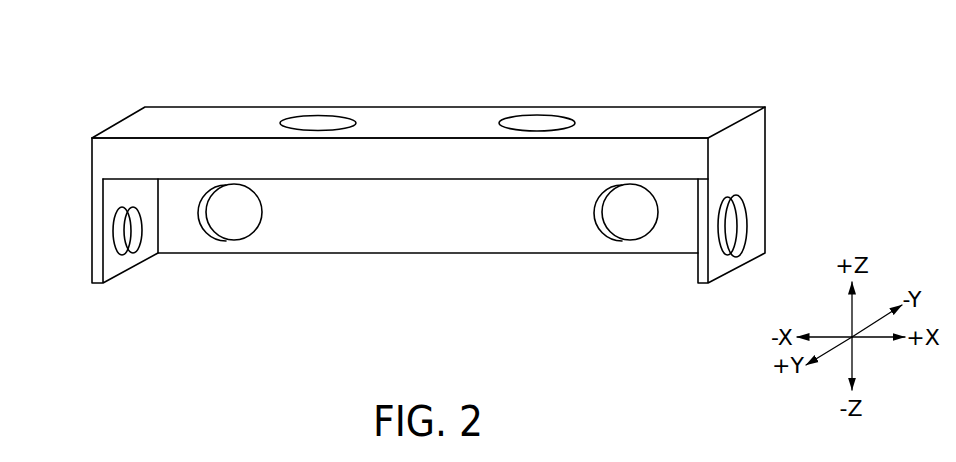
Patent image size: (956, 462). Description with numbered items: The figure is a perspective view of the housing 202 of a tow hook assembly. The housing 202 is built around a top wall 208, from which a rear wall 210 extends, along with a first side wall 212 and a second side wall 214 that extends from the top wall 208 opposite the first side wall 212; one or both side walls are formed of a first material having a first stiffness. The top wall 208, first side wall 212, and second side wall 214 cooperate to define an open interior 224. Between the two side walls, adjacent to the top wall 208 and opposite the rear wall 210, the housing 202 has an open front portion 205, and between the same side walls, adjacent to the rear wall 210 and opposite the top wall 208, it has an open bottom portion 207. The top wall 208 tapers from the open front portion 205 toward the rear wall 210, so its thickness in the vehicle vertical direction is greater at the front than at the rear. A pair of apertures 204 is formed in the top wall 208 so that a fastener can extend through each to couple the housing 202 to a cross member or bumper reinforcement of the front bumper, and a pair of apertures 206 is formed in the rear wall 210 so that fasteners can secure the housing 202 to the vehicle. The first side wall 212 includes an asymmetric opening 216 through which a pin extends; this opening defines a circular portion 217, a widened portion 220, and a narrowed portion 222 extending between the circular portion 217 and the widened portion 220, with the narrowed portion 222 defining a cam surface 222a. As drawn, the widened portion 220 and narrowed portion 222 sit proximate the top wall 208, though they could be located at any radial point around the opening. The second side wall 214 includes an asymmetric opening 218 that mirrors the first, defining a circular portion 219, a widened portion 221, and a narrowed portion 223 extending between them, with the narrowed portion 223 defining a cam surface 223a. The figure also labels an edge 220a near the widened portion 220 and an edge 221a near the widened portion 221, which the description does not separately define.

The housing 202 is at (424, 196).
The apertures 204 is at (323, 120).
The open front portion 205 is at (405, 237).
The apertures 206 is at (250, 210).
The open bottom portion 207 is at (428, 275).
The top wall 208 is at (178, 116).
The rear wall 210 is at (665, 248).
The first side wall 212 is at (754, 145).
The second side wall 214 is at (115, 236).
The asymmetric opening 216 is at (736, 193).
The circular portion 217 is at (730, 256).
The asymmetric opening 218 is at (115, 238).
The circular portion 219 is at (128, 246).
The widened portion 220 is at (735, 181).
The side aperture edge 220a is at (724, 185).
The widened portion 221 is at (135, 192).
The boss outer edge 221a is at (126, 192).
The narrowed portion 222 is at (742, 199).
The cam surface 222a is at (727, 180).
The narrowed portion 223 is at (113, 219).
The cam surface 223a is at (128, 208).
The open interior 224 is at (468, 278).